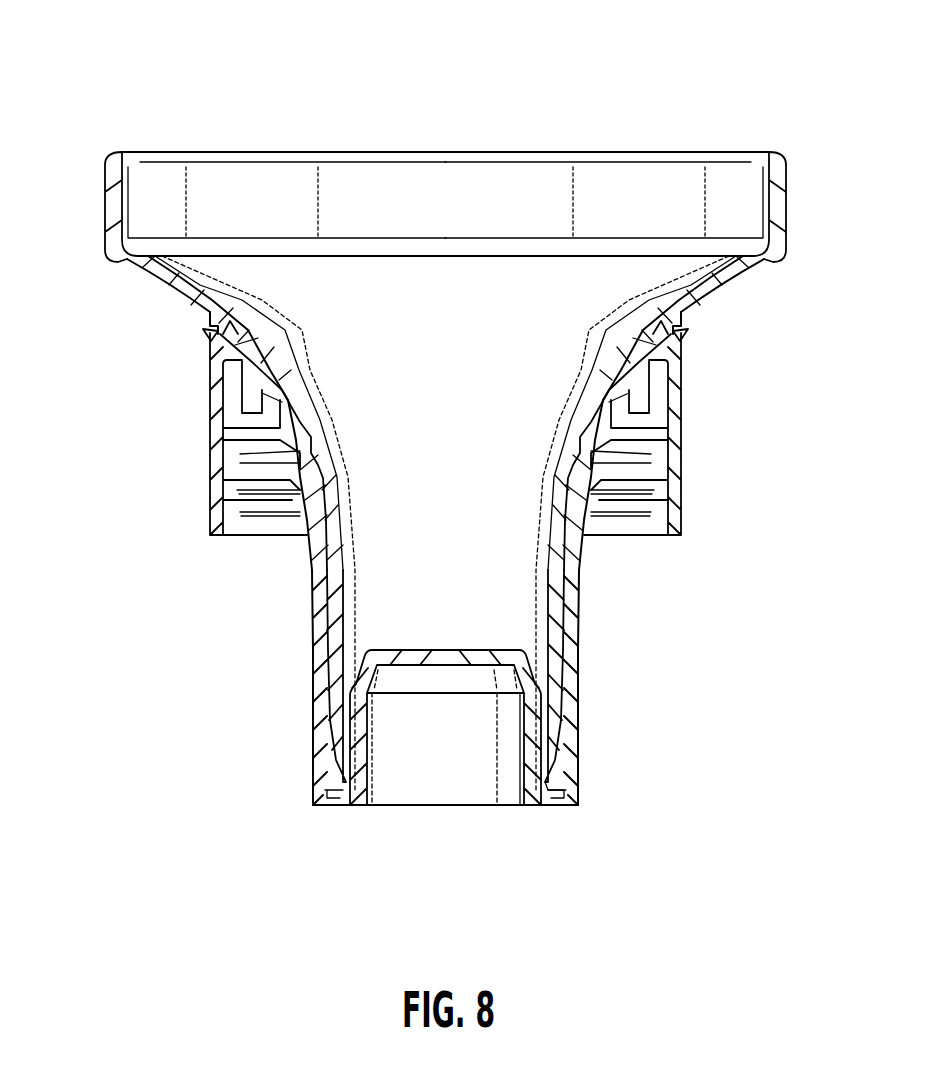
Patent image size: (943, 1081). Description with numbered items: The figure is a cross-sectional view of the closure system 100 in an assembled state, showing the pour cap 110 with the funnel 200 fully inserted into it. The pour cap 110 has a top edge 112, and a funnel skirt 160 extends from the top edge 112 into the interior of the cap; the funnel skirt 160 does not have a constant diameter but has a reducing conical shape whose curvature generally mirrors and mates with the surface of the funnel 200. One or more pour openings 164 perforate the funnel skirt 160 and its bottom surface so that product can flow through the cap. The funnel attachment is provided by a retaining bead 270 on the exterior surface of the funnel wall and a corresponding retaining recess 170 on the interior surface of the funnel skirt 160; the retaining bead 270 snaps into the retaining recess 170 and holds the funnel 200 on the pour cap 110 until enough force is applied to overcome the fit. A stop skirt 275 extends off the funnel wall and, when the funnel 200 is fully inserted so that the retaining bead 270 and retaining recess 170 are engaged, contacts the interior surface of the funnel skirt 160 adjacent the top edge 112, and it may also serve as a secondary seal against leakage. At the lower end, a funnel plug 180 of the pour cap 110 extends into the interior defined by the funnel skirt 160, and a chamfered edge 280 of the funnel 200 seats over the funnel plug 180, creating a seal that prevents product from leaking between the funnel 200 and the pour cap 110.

The closure system 100 is at (171, 83).
The pour cap 110 is at (135, 518).
The top edge 112 is at (707, 331).
The funnel skirt 160 is at (579, 553).
The pour opening 164 is at (299, 457).
The retaining recess 170 is at (261, 442).
The funnel plug 180 is at (445, 790).
The funnel 200 is at (460, 420).
The retaining bead 270 is at (590, 425).
The stop skirt 275 is at (207, 317).
The chamfered edge 280 is at (554, 777).